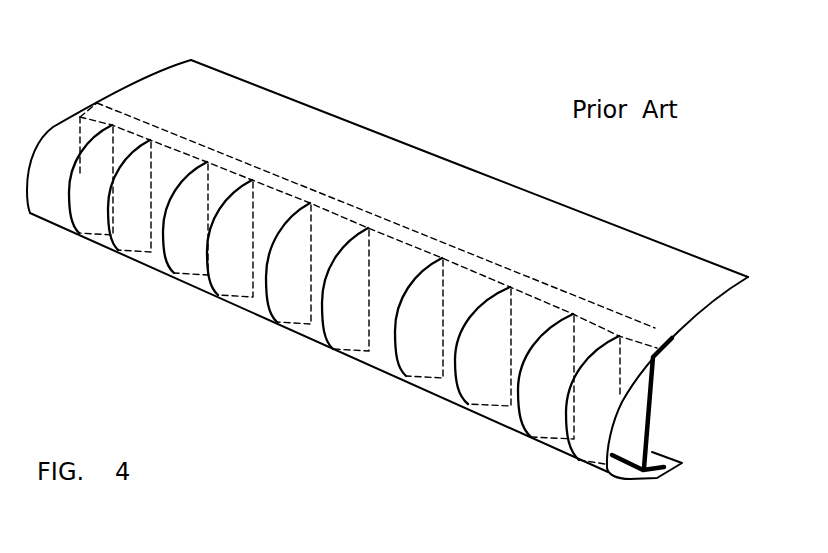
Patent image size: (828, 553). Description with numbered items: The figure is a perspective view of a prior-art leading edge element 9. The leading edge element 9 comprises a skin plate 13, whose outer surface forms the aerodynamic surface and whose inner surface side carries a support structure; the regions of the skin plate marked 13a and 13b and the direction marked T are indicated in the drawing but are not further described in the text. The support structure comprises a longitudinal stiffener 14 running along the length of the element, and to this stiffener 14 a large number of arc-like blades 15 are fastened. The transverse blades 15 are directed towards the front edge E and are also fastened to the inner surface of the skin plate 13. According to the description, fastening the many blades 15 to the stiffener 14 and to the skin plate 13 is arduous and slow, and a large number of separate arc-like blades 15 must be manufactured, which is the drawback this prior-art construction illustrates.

The leading edge element 9 is at (98, 68).
The skin plate 13 is at (224, 96).
The upper skin portion 13a is at (678, 285).
The skin end portion 13b is at (702, 311).
The longitudinal stiffener 14 is at (652, 407).
The arc-like blades 15 is at (340, 313).
The thickness direction T is at (452, 133).
The front edge E is at (163, 304).